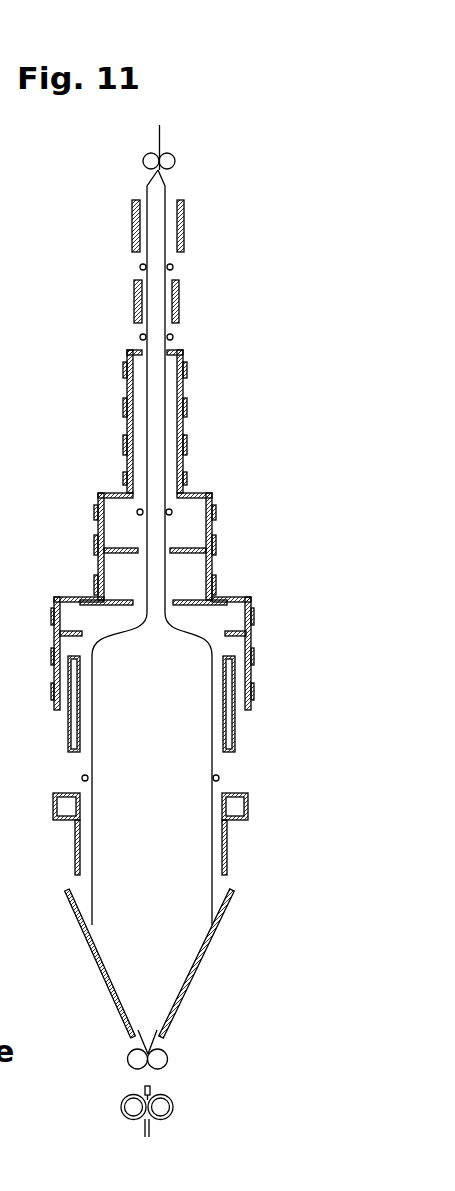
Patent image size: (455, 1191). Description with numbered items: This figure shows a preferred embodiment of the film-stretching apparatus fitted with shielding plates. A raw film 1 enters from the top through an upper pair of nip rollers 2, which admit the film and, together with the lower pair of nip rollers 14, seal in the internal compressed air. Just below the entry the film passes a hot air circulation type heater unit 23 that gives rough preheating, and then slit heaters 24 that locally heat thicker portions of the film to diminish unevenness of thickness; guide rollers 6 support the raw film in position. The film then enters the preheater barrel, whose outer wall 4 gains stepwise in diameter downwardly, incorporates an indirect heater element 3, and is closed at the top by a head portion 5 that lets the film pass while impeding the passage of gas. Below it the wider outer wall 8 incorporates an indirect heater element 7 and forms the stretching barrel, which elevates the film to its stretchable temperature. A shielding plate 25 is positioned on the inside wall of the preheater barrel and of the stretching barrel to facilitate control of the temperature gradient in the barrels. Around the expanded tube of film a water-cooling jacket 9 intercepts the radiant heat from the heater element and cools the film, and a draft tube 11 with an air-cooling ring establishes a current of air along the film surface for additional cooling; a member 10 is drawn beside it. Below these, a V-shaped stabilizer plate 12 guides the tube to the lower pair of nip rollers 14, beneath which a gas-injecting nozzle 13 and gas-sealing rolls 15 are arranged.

The raw film 1 is at (160, 138).
The upper pair of nip rollers 2 is at (142, 161).
The indirect heater element 3 is at (187, 440).
The outer wall of preheater barrel 4 is at (125, 424).
The head portion 5 is at (172, 348).
The guide roller 6 is at (140, 267).
The indirect heater element 7 is at (52, 648).
The outer wall of stretching barrel 8 is at (53, 677).
The water-cooling jacket 9 is at (236, 735).
The box-shaped guide members 10 is at (248, 803).
The draft tube 11 is at (228, 857).
The V-shaped stabilizer plate 12 is at (223, 915).
The gas-injecting nozzle 13 is at (142, 1085).
The lower pair of nip rollers 14 is at (165, 1057).
The gas-sealing rolls 15 is at (174, 1107).
The hot air circulation type heater unit 23 is at (185, 216).
The slit heaters 24 is at (176, 300).
The shielding plate 25 is at (118, 548).